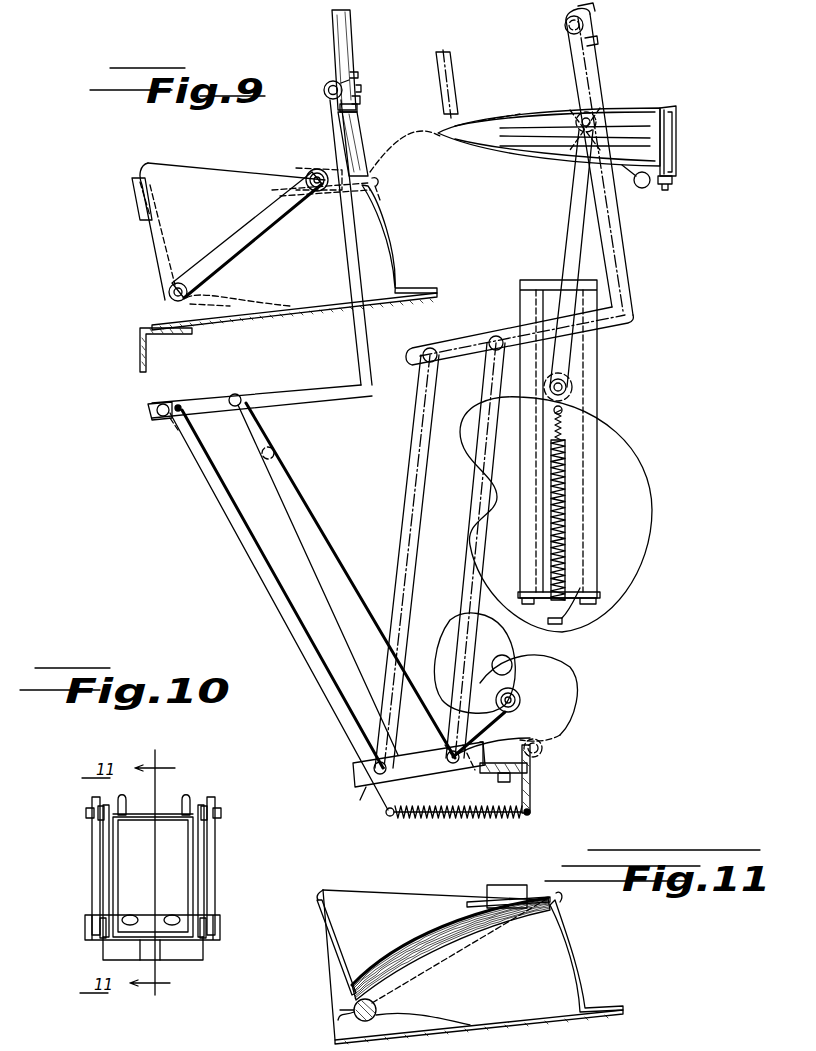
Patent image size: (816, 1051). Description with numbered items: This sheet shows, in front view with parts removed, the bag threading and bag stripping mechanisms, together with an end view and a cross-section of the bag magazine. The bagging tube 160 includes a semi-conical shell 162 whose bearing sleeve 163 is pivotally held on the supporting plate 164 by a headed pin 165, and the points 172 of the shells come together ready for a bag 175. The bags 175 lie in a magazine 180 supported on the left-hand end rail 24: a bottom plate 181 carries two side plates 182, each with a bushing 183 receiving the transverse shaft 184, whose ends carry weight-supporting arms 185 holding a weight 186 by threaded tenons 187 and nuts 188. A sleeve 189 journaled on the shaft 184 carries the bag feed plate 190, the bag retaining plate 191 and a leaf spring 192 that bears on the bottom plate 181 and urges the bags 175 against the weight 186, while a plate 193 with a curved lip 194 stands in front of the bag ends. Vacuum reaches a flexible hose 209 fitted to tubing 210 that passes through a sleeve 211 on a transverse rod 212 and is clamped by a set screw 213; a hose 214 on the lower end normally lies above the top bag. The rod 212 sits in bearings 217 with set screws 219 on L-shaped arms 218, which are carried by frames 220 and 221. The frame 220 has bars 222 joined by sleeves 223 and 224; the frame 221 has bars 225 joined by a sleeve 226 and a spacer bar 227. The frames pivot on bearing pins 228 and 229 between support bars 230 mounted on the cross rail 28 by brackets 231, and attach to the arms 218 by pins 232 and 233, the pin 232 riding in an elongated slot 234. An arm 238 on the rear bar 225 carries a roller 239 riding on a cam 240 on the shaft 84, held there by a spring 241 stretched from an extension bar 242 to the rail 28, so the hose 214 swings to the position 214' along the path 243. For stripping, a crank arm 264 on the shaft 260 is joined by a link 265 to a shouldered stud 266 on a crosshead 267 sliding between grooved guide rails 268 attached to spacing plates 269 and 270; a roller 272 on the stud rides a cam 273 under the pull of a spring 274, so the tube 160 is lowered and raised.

In FIG. 9, the left-hand end rail 24 is at (139, 341).
In FIG. 9, the cross rail 28 is at (531, 795).
In FIG. 9, the shaft 84 is at (510, 666).
In FIG. 9, the bagging tube 160 is at (499, 164).
In FIG. 9, the semi-conical shell 162 is at (572, 158).
In FIG. 9, the bearing sleeve 163 is at (676, 147).
In FIG. 9, the supporting plate 164 is at (673, 178).
In FIG. 9, the headed pin 165 is at (672, 130).
In FIG. 9, the points 172 is at (428, 140).
In FIG. 11, the bag 175 is at (392, 920).
In FIG. 9, the magazine 180 is at (203, 158).
In FIG. 11, the magazine 180 is at (348, 875).
In FIG. 9, the bottom plate 181 is at (270, 318).
In FIG. 10, the bottom plate 181 is at (103, 958).
In FIG. 11, the bottom plate 181 is at (518, 1028).
In FIG. 9, the side plate 182 is at (150, 166).
In FIG. 10, the side plate 182 is at (103, 860).
In FIG. 11, the side plate 182 is at (424, 896).
In FIG. 10, the bushing 183 is at (102, 940).
In FIG. 9, the transverse shaft 184 is at (186, 300).
In FIG. 10, the transverse shaft 184 is at (221, 926).
In FIG. 11, the transverse shaft 184 is at (378, 1008).
In FIG. 9, the weight-supporting arm 185 is at (255, 212).
In FIG. 10, the weight-supporting arm 185 is at (92, 835).
In FIG. 11, the weight-supporting arm 185 is at (440, 972).
In FIG. 9, the weight 186 is at (332, 164).
In FIG. 10, the weight 186 is at (176, 814).
In FIG. 11, the weight 186 is at (510, 885).
In FIG. 9, the threaded tenon 187 is at (310, 174).
In FIG. 10, the threaded tenon 187 is at (222, 811).
In FIG. 9, the nut 188 is at (311, 188).
In FIG. 10, the nut 188 is at (212, 808).
In FIG. 11, the sleeve 189 is at (356, 1017).
In FIG. 9, the bag feed plate 190 is at (266, 226).
In FIG. 11, the bag feed plate 190 is at (500, 924).
In FIG. 9, the bag retaining plate 191 is at (133, 191).
In FIG. 10, the bag retaining plate 191 is at (182, 836).
In FIG. 11, the bag retaining plate 191 is at (318, 930).
In FIG. 9, the leaf spring 192 is at (244, 300).
In FIG. 10, the leaf spring 192 is at (160, 950).
In FIG. 11, the leaf spring 192 is at (455, 1024).
In FIG. 9, the plate 193 is at (397, 256).
In FIG. 11, the plate 193 is at (585, 972).
In FIG. 9, the curved lip 194 is at (378, 181).
In FIG. 11, the curved lip 194 is at (568, 900).
In FIG. 9, the flexible hose 209 is at (352, 36).
In FIG. 9, the tubing 210 is at (340, 109).
In FIG. 9, the sleeve 211 is at (361, 101).
In FIG. 9, the transverse rod 212 is at (324, 88).
In FIG. 9, the set screw 213 is at (362, 89).
In FIG. 9, the hose 214 is at (371, 144).
In FIG. 9, the hose position 214' is at (619, 159).
In FIG. 9, the bearing 217 is at (333, 78).
In FIG. 9, the L-shaped arm 218 is at (359, 348).
In FIG. 9, the set screw 219 is at (355, 75).
In FIG. 9, the frame 220 is at (195, 484).
In FIG. 9, the frame 221 is at (310, 488).
In FIG. 9, the bar 222 is at (228, 519).
In FIG. 9, the sleeve 223 is at (360, 745).
In FIG. 9, the sleeve 224 is at (168, 430).
In FIG. 9, the bar 225 is at (332, 547).
In FIG. 9, the sleeve 226 is at (474, 780).
In FIG. 9, the spacer bar 227 is at (276, 453).
In FIG. 9, the bearing pin 228 is at (372, 772).
In FIG. 9, the bearing pin 229 is at (447, 762).
In FIG. 9, the support bar 230 is at (366, 788).
In FIG. 9, the bracket 231 is at (530, 768).
In FIG. 9, the pin 232 is at (160, 403).
In FIG. 9, the pin 233 is at (236, 395).
In FIG. 9, the elongated slot 234 is at (182, 410).
In FIG. 9, the arm 238 is at (447, 733).
In FIG. 9, the roller 239 is at (521, 701).
In FIG. 9, the cam 240 is at (452, 624).
In FIG. 9, the spring 241 is at (455, 820).
In FIG. 9, the extension bar 242 is at (386, 812).
In FIG. 9, the path of travel 243 is at (508, 118).
In FIG. 9, the shaft 260 is at (643, 188).
In FIG. 9, the crank arm 264 is at (572, 112).
In FIG. 9, the link 265 is at (574, 214).
In FIG. 9, the shouldered stud 266 is at (567, 390).
In FIG. 9, the crosshead 267 is at (570, 434).
In FIG. 9, the grooved guide rail 268 is at (558, 620).
In FIG. 9, the spacing plate 269 is at (520, 282).
In FIG. 9, the spacing plate 270 is at (601, 600).
In FIG. 9, the roller 272 is at (570, 376).
In FIG. 9, the cam 273 is at (635, 477).
In FIG. 9, the spring 274 is at (568, 548).